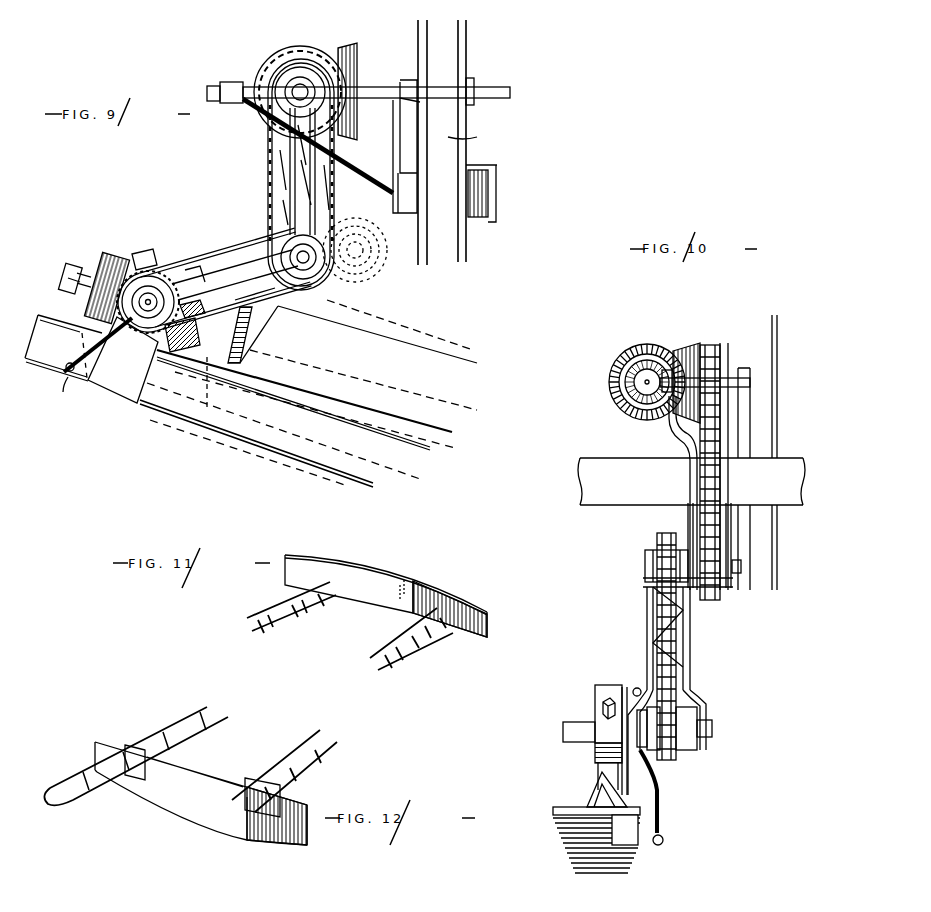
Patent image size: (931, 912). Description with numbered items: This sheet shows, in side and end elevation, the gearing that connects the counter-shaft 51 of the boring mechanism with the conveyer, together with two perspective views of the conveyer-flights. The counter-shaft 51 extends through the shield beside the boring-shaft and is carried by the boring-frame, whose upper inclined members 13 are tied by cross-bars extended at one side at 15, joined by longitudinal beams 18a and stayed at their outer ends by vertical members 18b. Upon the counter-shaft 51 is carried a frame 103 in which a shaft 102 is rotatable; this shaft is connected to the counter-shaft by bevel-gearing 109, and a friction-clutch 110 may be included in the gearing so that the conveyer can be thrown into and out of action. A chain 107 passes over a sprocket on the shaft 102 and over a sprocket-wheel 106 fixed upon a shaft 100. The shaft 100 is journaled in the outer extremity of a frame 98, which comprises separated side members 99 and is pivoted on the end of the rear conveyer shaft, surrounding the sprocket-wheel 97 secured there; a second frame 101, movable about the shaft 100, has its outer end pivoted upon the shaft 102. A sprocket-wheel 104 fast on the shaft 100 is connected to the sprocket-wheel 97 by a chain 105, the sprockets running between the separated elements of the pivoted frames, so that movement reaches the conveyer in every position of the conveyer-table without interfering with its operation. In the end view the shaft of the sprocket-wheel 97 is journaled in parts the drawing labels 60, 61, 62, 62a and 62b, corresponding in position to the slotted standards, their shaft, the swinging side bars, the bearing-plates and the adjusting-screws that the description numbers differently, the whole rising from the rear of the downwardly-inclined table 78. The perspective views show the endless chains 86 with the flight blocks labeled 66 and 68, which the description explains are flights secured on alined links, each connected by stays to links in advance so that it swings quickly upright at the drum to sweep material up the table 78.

In FIG. 9, the upper inclined members 13 is at (462, 40).
In FIG. 9, the cross-bar extension 15 is at (406, 218).
In FIG. 9, the longitudinal beams 18a is at (505, 183).
In FIG. 9, the vertical members 18b is at (460, 137).
In FIG. 9, the counter-shaft 51 is at (362, 82).
In FIG. 10, the counter-shaft 51 is at (645, 383).
In FIG. 9, the plate 60 is at (123, 360).
In FIG. 10, the plate 60 is at (637, 800).
In FIG. 9, the sprocket shaft 61 is at (147, 300).
In FIG. 10, the sprocket shaft 61 is at (580, 731).
In FIG. 9, the chute frame 62 is at (240, 397).
In FIG. 10, the chute frame 62 is at (595, 757).
In FIG. 9, the bearing block 62a is at (112, 266).
In FIG. 10, the bearing block 62a is at (610, 690).
In FIG. 9, the bolt 62b is at (68, 276).
In FIG. 11, the guide block 66 is at (386, 596).
In FIG. 12, the guide block 68 is at (201, 793).
In FIG. 9, the downwardly-inclined table 78 is at (256, 445).
In FIG. 10, the downwardly-inclined table 78 is at (596, 846).
In FIG. 11, the endless chains 86 is at (388, 647).
In FIG. 12, the endless chains 86 is at (270, 770).
In FIG. 9, the sprocket-wheel 97 is at (165, 275).
In FIG. 9, the frame 98 is at (205, 283).
In FIG. 10, the frame 98 is at (688, 610).
In FIG. 9, the side members 99 is at (352, 355).
In FIG. 10, the side members 99 is at (651, 606).
In FIG. 9, the shaft 100 is at (318, 278).
In FIG. 10, the shaft 100 is at (645, 566).
In FIG. 9, the frame 101 is at (300, 177).
In FIG. 10, the frame 101 is at (690, 510).
In FIG. 9, the shaft 102 is at (285, 98).
In FIG. 9, the frame 103 is at (265, 126).
In FIG. 9, the sprocket-wheel 104 is at (316, 258).
In FIG. 10, the sprocket-wheel 104 is at (657, 540).
In FIG. 9, the chain 105 is at (247, 240).
In FIG. 10, the chain 105 is at (668, 642).
In FIG. 10, the sprocket-wheel 106 is at (715, 590).
In FIG. 9, the chain 107 is at (268, 158).
In FIG. 10, the chain 107 is at (707, 523).
In FIG. 9, the bevel-gearing 109 is at (330, 56).
In FIG. 9, the friction-clutch 110 is at (97, 365).
In FIG. 10, the friction-clutch 110 is at (650, 757).